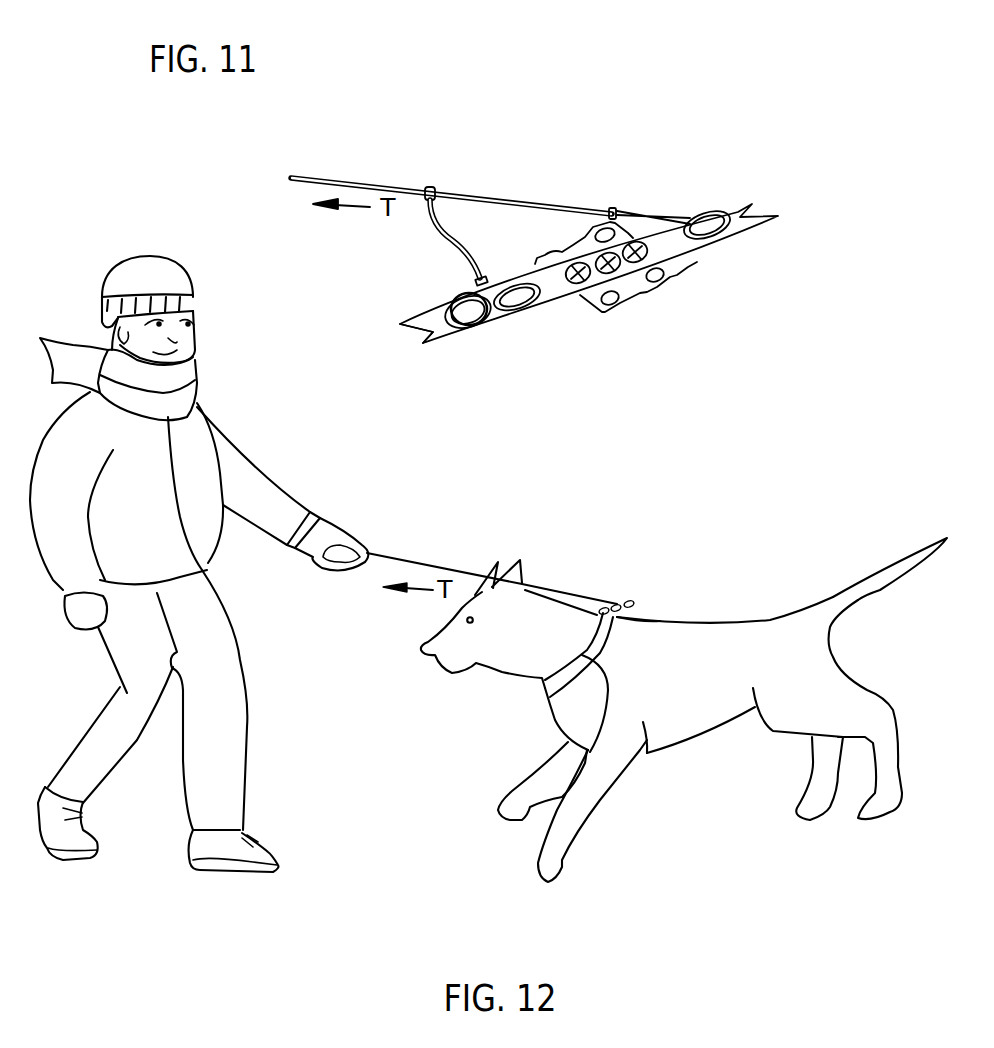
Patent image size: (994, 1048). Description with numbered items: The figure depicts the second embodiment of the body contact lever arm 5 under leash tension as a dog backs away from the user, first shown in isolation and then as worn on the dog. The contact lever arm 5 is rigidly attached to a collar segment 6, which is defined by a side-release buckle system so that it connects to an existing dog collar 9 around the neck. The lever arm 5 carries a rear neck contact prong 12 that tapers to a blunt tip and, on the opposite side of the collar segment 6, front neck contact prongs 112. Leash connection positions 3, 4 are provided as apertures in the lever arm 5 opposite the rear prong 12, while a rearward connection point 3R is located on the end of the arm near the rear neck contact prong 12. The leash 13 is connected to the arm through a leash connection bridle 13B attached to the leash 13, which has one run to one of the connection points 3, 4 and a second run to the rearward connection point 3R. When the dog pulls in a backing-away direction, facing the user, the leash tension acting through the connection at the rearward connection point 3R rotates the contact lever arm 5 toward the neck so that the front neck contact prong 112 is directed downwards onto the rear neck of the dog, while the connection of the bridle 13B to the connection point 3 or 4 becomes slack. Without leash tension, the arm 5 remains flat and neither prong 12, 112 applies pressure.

In FIG. 11, the leash connection position 3 is at (520, 308).
In FIG. 11, the rearward connection point 3R is at (746, 225).
In FIG. 11, the leash connection position 4 is at (477, 326).
In FIG. 11, the body contact lever arm 5 is at (558, 302).
In FIG. 12, the body contact lever arm 5 is at (634, 615).
In FIG. 11, the collar segment 6 is at (680, 275).
In FIG. 12, the dog collar 9 is at (607, 660).
In FIG. 11, the rear neck contact prong 12 is at (743, 200).
In FIG. 12, the rear neck contact prong 12 is at (627, 602).
In FIG. 11, the leash 13 is at (360, 180).
In FIG. 12, the leash 13 is at (553, 583).
In FIG. 11, the leash connection bridle 13B is at (440, 217).
In FIG. 11, the front neck contact prong 112 is at (445, 338).
In FIG. 12, the front neck contact prong 112 is at (595, 615).